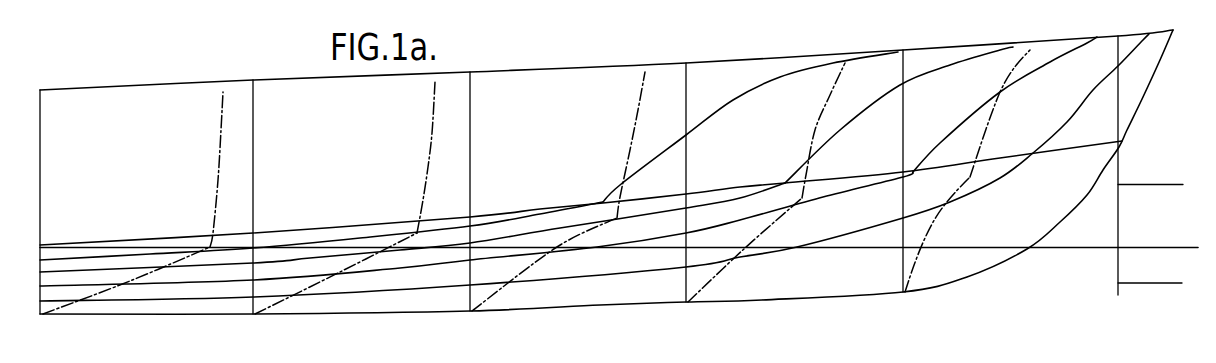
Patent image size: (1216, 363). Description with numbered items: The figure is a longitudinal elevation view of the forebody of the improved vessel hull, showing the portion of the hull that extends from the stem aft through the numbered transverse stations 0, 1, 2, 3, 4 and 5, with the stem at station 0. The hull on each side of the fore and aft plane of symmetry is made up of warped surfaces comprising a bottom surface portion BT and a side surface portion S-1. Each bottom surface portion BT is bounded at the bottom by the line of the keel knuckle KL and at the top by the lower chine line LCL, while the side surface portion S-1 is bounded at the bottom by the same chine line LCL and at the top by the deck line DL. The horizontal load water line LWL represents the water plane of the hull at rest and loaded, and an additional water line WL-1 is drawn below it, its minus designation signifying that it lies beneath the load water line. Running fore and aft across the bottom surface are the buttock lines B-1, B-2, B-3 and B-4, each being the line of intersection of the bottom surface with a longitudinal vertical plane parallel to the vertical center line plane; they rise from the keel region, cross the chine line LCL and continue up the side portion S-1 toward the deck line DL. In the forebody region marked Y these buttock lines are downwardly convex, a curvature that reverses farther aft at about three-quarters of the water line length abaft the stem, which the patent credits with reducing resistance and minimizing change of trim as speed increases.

The deck line DL is at (588, 65).
The keel knuckle line KL is at (762, 301).
The load water line LWL is at (619, 240).
The water line minus one WL-1 is at (1150, 275).
The lower chine line LCL is at (336, 225).
The buttock line B-1 is at (99, 298).
The buttock line B-2 is at (146, 279).
The buttock line B-3 is at (197, 279).
The buttock line B-4 is at (85, 258).
The side surface portion S-1 is at (558, 191).
The forebody region of downwardly convex buttock lines Y is at (397, 293).
The bottom surface portion BT is at (567, 263).
The station 0 is at (1120, 177).
The station 1 is at (905, 183).
The station 2 is at (688, 195).
The station 3 is at (472, 205).
The station 4 is at (255, 209).
The station 5 is at (40, 214).